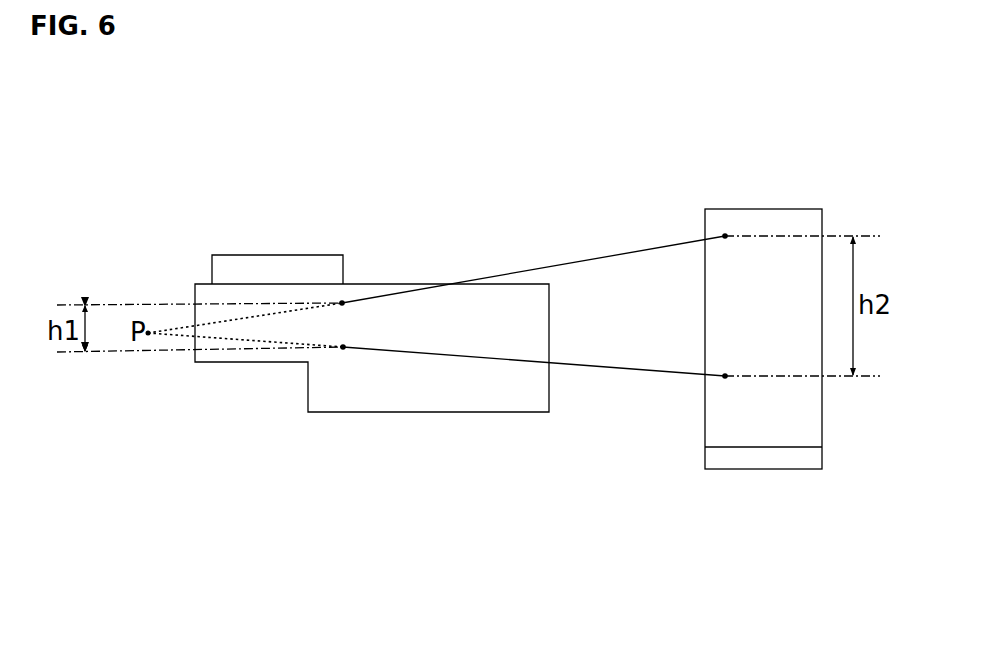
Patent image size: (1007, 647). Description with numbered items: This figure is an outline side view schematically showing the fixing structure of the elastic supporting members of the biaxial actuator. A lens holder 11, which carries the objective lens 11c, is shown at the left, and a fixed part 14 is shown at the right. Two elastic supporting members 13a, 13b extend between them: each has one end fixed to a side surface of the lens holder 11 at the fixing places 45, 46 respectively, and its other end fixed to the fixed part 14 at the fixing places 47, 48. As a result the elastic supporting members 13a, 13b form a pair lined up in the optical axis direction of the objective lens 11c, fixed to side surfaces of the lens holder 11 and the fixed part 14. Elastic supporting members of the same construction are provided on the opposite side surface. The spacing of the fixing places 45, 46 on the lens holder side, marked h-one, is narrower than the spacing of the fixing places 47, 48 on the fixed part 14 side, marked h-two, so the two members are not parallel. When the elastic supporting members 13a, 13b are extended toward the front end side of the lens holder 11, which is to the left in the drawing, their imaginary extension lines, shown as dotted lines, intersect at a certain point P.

The lens holder 11 is at (403, 284).
The objective lens 11c is at (222, 265).
The elastic supporting member 13a is at (582, 257).
The elastic supporting member 13b is at (612, 368).
The fixed part 14 is at (748, 428).
The fixing place 45 is at (345, 302).
The fixing place 46 is at (343, 347).
The fixing place 47 is at (725, 236).
The fixing place 48 is at (725, 376).